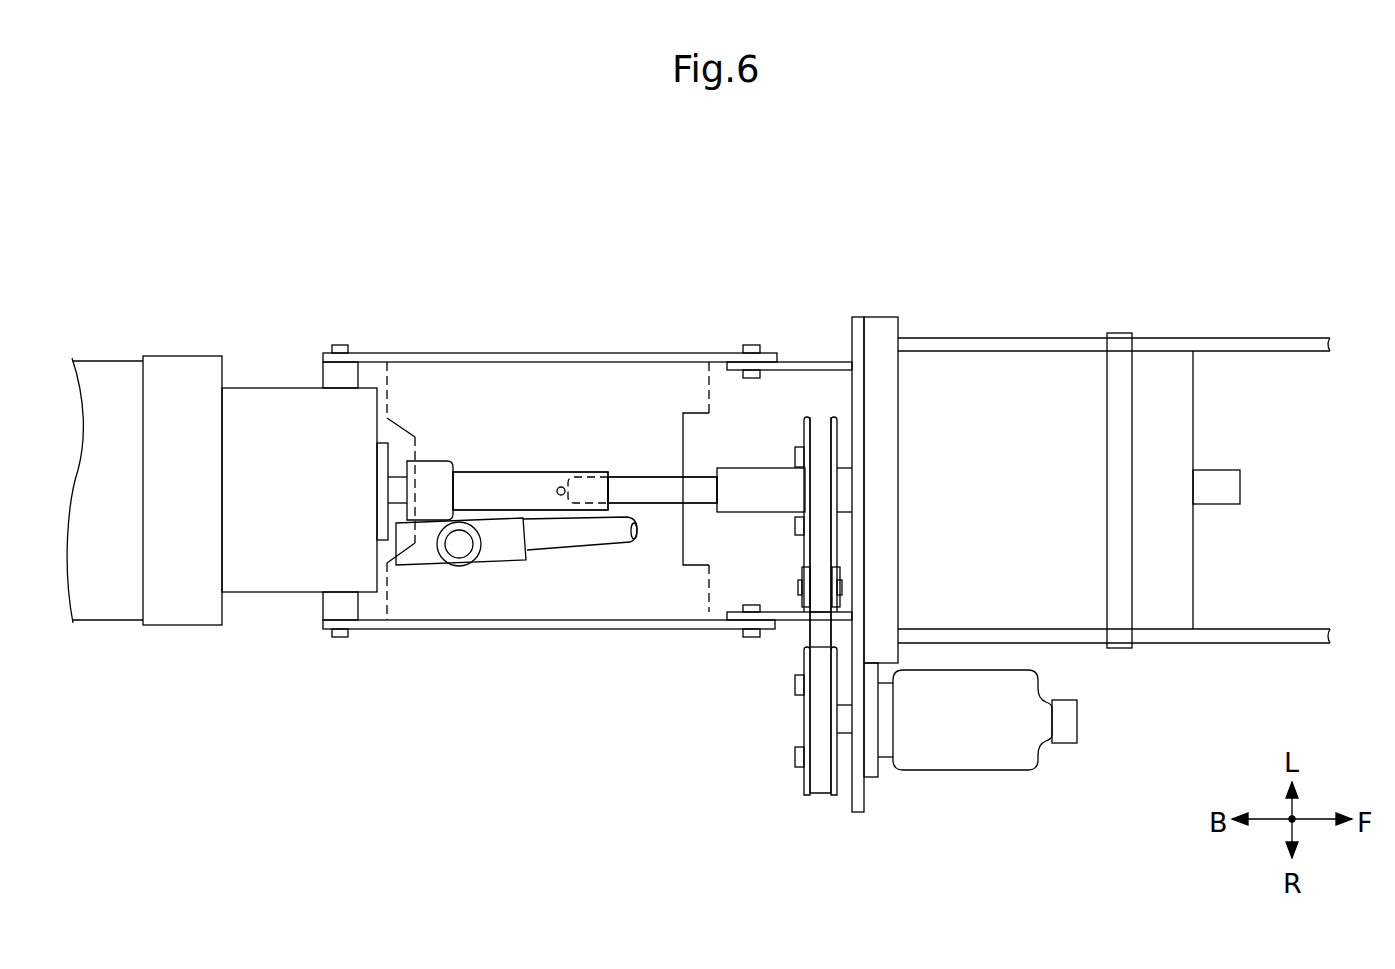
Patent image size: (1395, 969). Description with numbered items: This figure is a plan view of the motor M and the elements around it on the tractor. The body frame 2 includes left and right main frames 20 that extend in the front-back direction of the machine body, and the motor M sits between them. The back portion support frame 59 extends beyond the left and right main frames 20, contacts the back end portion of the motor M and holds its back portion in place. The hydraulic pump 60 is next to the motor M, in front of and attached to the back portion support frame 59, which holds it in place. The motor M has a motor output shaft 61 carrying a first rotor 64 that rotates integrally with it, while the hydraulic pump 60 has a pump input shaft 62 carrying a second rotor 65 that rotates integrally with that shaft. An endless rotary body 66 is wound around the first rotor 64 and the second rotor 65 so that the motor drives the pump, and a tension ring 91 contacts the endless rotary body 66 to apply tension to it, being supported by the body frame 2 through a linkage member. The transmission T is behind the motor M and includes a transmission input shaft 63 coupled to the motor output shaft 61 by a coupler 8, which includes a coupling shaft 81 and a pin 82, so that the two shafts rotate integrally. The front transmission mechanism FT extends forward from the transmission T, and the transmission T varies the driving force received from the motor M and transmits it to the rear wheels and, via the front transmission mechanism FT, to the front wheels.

The transmission T is at (283, 410).
The transmission input shaft 63 is at (480, 482).
The coupler 8 is at (585, 491).
The pin 82 is at (560, 489).
The coupling shaft 81 is at (648, 487).
The front transmission mechanism FT is at (578, 540).
The tension ring 91 is at (802, 573).
The motor output shaft 61 is at (843, 485).
The first rotor 64 is at (802, 437).
The second rotor 65 is at (803, 720).
The endless rotary body 66 is at (818, 632).
The pump input shaft 62 is at (845, 733).
The back portion support frame 59 is at (862, 810).
The hydraulic pump 60 is at (1007, 763).
The main frames 20 is at (1233, 338).
The motor M is at (1170, 378).
The body frame 2 is at (1304, 334).